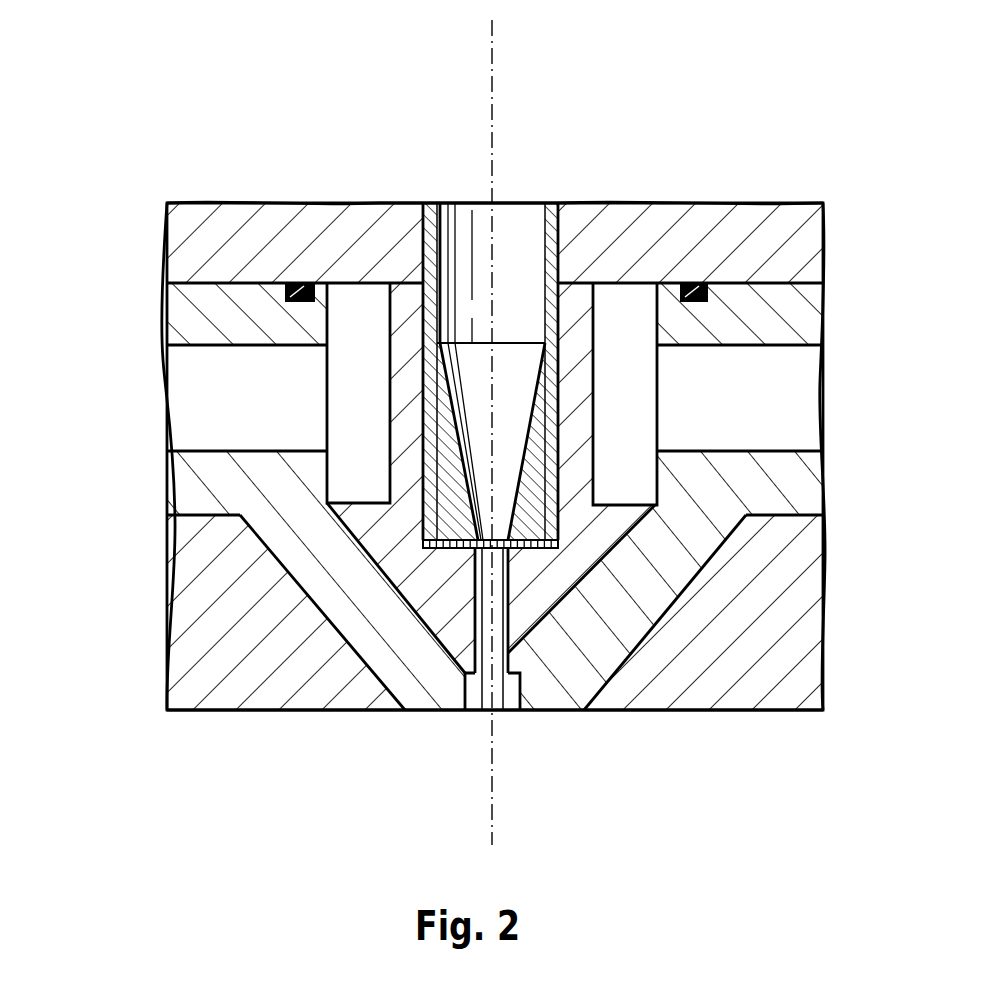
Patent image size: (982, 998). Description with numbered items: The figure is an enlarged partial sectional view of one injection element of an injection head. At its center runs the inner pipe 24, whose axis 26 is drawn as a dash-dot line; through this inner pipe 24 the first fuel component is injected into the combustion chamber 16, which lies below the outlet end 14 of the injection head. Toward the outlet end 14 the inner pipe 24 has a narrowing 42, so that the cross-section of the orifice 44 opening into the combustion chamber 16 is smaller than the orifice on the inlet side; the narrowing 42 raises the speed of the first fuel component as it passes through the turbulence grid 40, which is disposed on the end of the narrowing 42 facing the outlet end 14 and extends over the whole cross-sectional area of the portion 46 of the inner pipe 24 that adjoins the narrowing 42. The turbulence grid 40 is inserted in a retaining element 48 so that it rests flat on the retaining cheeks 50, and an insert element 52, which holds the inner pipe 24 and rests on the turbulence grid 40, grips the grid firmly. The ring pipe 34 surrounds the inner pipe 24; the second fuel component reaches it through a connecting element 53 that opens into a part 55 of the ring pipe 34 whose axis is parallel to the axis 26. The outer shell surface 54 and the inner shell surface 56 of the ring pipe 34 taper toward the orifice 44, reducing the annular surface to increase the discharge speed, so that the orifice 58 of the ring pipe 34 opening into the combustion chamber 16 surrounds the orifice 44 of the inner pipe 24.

The outlet end 14 is at (252, 712).
The combustion chamber 16 is at (743, 774).
The inner pipe 24 is at (524, 235).
The axis 26 is at (497, 56).
The ring pipe 34 is at (340, 376).
The turbulence grid 40 is at (430, 556).
The narrowing 42 is at (515, 440).
The orifice 44 is at (483, 711).
The portion 46 is at (506, 660).
The retaining element 48 is at (547, 577).
The retaining cheeks 50 is at (445, 557).
The insert element 52 is at (437, 445).
The connecting element 53 is at (190, 421).
The outer shell surface 54 is at (630, 557).
The part of the ring pipe 55 is at (356, 305).
The inner shell surface 56 is at (592, 530).
The orifice of the ring pipe 58 is at (472, 705).